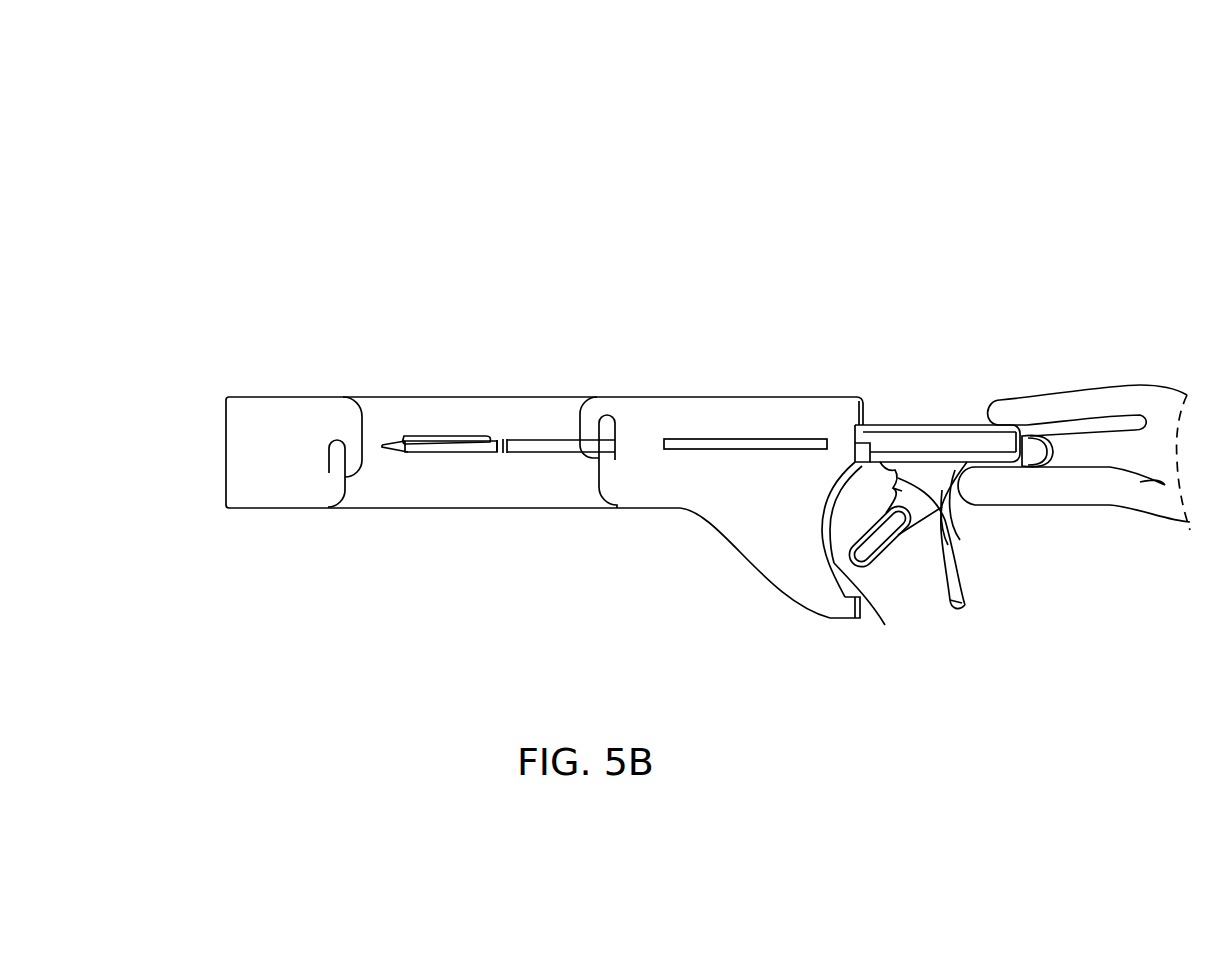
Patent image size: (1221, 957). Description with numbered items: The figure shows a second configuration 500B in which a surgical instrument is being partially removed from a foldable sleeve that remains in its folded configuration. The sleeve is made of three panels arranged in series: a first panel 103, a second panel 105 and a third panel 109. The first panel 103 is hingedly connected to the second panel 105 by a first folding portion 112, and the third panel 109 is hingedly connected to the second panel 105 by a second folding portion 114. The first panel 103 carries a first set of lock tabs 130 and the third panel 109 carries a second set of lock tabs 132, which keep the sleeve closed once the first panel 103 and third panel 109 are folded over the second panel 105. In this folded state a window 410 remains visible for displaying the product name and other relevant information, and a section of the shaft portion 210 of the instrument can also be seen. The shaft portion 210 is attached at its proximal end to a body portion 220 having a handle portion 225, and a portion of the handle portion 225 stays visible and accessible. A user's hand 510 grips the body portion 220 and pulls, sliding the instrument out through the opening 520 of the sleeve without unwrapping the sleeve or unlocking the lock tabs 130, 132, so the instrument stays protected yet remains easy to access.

The second configuration 500B is at (644, 96).
The second panel 105 is at (448, 497).
The second folding portion 114 is at (226, 430).
The second set of lock tabs 132 is at (339, 467).
The third panel 109 is at (243, 500).
The first set of lock tabs 130 is at (607, 458).
The shaft portion 210 is at (525, 445).
The window 410 is at (742, 437).
The first folding portion 112 is at (864, 397).
The body portion 220 is at (948, 440).
The first panel 103 is at (737, 545).
The opening 520 is at (860, 619).
The handle portion 225 is at (967, 540).
The user's hand 510 is at (1132, 402).